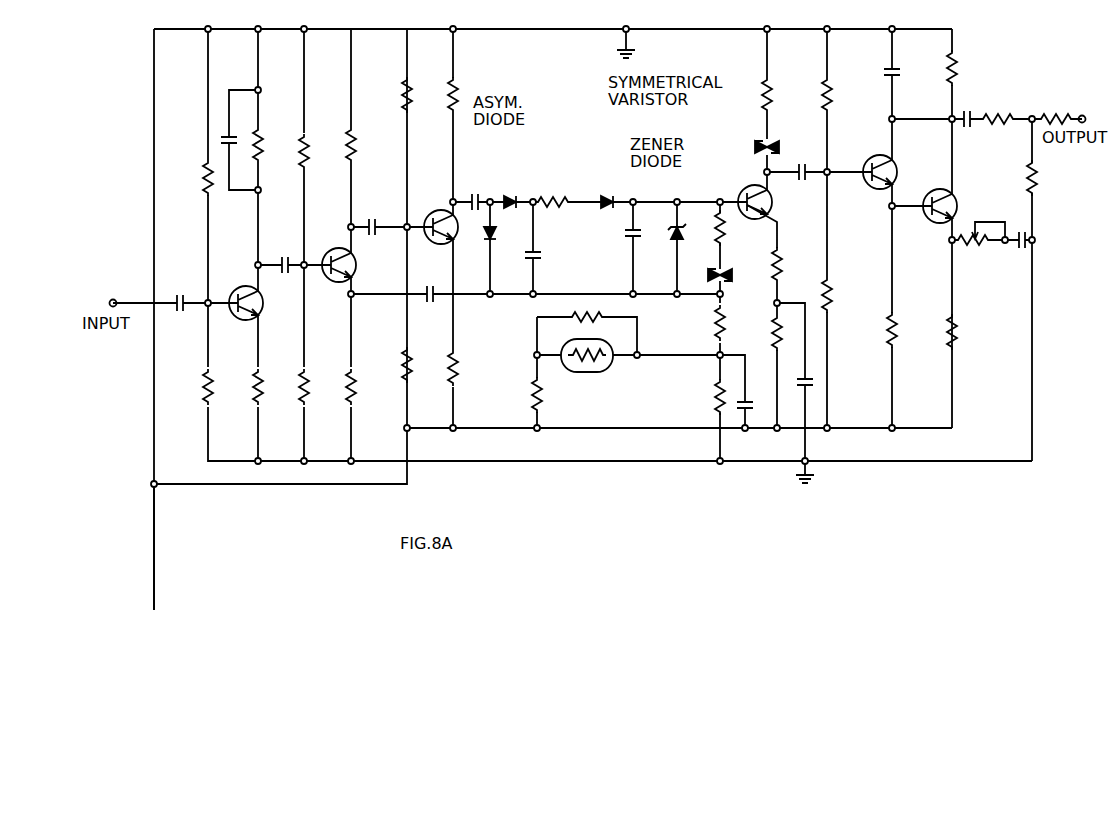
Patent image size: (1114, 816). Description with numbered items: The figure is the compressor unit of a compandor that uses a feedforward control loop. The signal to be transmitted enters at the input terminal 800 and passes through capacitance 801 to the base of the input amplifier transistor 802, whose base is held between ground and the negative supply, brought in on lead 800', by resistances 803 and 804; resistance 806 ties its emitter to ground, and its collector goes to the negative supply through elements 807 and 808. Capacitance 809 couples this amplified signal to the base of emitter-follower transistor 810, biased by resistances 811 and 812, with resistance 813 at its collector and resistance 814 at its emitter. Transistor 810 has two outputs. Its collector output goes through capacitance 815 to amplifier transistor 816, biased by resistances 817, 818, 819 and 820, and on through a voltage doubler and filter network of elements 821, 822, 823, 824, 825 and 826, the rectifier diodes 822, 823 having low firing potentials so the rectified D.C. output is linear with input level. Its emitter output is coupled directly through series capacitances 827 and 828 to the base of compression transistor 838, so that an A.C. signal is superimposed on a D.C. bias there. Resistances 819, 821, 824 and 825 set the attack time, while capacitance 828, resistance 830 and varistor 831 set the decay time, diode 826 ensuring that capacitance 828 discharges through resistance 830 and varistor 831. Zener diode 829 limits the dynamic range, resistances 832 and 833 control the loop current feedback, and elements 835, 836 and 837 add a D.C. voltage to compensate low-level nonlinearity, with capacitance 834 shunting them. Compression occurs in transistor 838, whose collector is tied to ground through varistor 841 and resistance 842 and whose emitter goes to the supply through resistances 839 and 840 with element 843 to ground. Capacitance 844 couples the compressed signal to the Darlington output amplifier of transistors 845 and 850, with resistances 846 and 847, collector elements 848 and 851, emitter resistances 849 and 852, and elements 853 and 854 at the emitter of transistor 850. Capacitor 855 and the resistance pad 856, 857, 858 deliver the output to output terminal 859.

The input terminal 800 is at (112, 292).
The supply lead 800' is at (179, 547).
The capacitance 801 is at (191, 290).
The transistor 802 is at (251, 298).
The resistance 803 is at (203, 366).
The resistance 804 is at (203, 176).
The resistance 806 is at (253, 372).
The element 807 is at (264, 150).
The element 808 is at (222, 135).
The capacitance 809 is at (294, 253).
The transistor 810 is at (340, 256).
The resistance 811 is at (299, 380).
The resistance 812 is at (298, 138).
The resistance 813 is at (352, 140).
The resistance 814 is at (346, 381).
The capacitance 815 is at (383, 212).
The transistor 816 is at (432, 210).
The resistance 817 is at (402, 82).
The resistance 818 is at (402, 350).
The resistance 819 is at (458, 90).
The resistance 820 is at (457, 360).
The element 821 is at (486, 186).
The rectifier diode 822 is at (500, 236).
The rectifier diode 823 is at (510, 194).
The element 824 is at (538, 256).
The element 825 is at (563, 197).
The diode 826 is at (616, 186).
The capacitance 827 is at (441, 278).
The capacitance 828 is at (626, 234).
The Zener diode 829 is at (686, 172).
The resistance 830 is at (724, 228).
The varistor 831 is at (742, 272).
The resistance 832 is at (715, 326).
The resistance 833 is at (714, 396).
The capacitance 834 is at (754, 408).
The element 835 is at (598, 314).
The element 836 is at (582, 375).
The element 837 is at (532, 396).
The transistor 838 is at (748, 174).
The resistance 839 is at (772, 336).
The resistance 840 is at (781, 256).
The varistor 841 is at (754, 147).
The resistance 842 is at (762, 100).
The element 843 is at (812, 378).
The capacitance 844 is at (814, 157).
The transistor 845 is at (872, 156).
The resistor 846 is at (822, 100).
The resistor 847 is at (832, 290).
The element 848 is at (884, 72).
The resistance 849 is at (886, 328).
The transistor 850 is at (938, 192).
The element 851 is at (957, 72).
The resistance 852 is at (957, 322).
The element 853 is at (994, 246).
The element 854 is at (1024, 232).
The capacitor 855 is at (980, 104).
The resistance pad 856 is at (1006, 124).
The resistance pad 857 is at (1026, 178).
The resistance pad 858 is at (1058, 112).
The output terminal 859 is at (1080, 112).